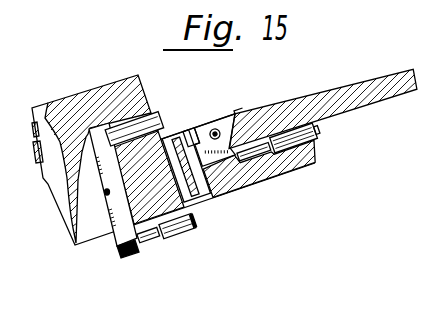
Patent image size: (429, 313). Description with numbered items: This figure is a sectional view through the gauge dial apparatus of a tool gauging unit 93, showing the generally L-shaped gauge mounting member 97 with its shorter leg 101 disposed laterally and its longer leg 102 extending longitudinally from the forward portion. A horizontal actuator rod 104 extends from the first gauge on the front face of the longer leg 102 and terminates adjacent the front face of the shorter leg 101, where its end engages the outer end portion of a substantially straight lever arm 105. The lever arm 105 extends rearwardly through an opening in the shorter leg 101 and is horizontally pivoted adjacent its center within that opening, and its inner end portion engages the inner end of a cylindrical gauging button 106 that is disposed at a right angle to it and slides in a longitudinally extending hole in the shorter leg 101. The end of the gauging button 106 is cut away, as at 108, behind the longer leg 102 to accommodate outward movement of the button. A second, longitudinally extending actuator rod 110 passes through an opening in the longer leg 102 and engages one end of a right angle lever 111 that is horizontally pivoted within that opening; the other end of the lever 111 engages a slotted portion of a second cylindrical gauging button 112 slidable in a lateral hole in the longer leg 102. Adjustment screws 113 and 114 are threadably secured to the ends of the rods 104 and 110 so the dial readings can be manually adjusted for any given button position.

The tool gauging unit 93 is at (324, 203).
The gauge mounting member 97 is at (275, 117).
The shorter leg 101 is at (97, 87).
The longer leg 102 is at (372, 79).
The actuator rod 104 is at (187, 232).
The lever arm 105 is at (113, 241).
The gauging button 106 is at (157, 133).
The cut away end 108 is at (149, 168).
The actuator rod 110 is at (320, 143).
The right angle lever 111 is at (206, 129).
The gauging button 112 is at (203, 197).
The adjustment screw 113 is at (156, 238).
The adjustment screw 114 is at (263, 173).